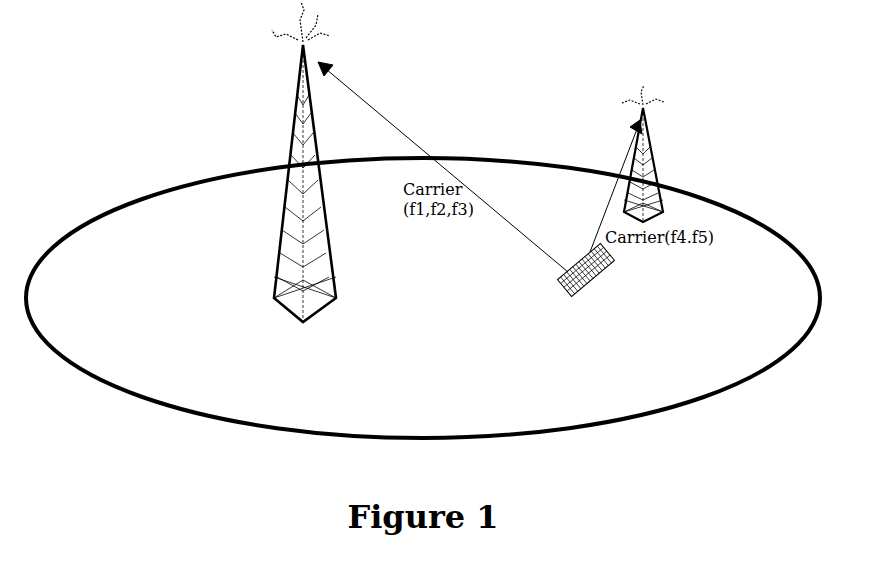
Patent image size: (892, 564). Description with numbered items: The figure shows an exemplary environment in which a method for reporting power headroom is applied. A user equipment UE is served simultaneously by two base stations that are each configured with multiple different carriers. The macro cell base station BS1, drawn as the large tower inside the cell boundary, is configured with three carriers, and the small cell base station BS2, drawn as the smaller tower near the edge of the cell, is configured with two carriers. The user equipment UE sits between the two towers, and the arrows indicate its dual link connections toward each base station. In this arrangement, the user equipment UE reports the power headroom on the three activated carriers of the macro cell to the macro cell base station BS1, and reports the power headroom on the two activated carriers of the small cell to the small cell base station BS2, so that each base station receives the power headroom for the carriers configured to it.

The macro cell base station BS1 is at (308, 184).
The small cell base station BS2 is at (683, 153).
The user equipment UE is at (585, 280).